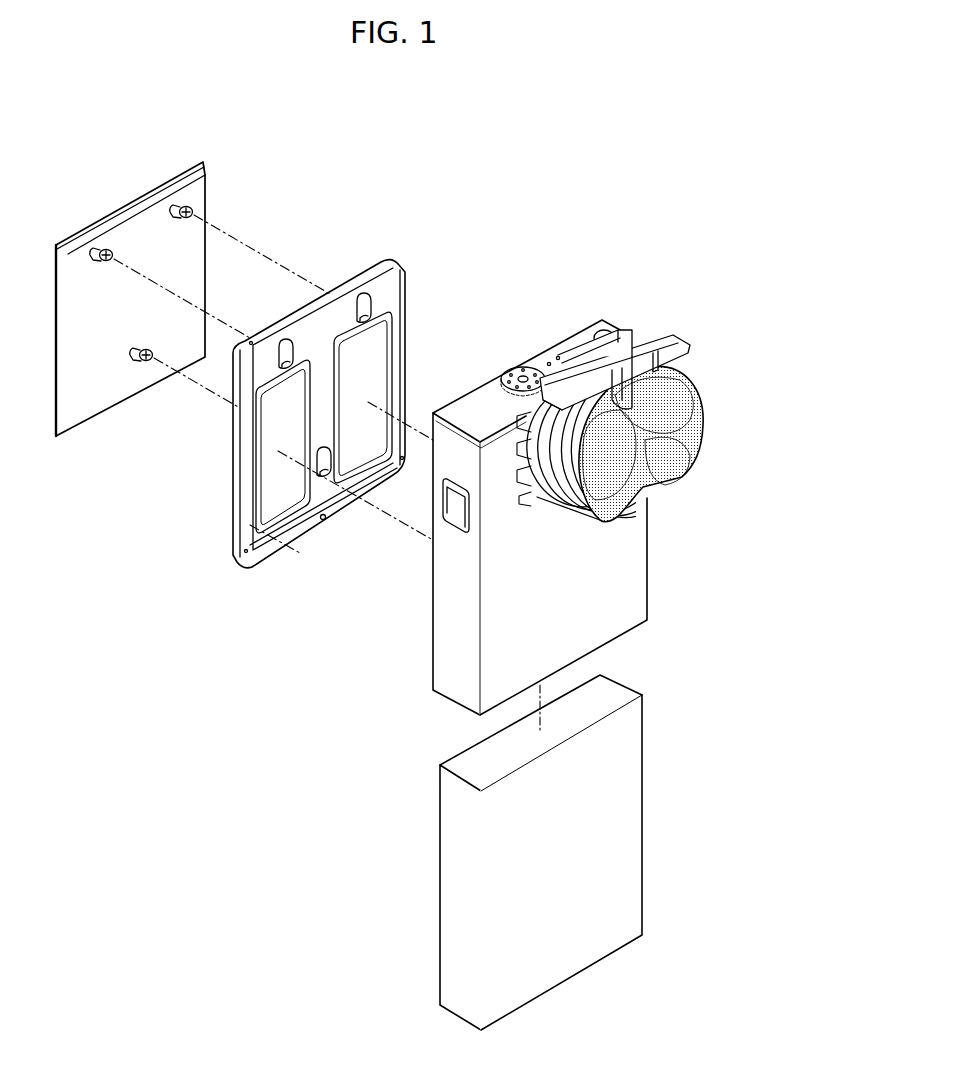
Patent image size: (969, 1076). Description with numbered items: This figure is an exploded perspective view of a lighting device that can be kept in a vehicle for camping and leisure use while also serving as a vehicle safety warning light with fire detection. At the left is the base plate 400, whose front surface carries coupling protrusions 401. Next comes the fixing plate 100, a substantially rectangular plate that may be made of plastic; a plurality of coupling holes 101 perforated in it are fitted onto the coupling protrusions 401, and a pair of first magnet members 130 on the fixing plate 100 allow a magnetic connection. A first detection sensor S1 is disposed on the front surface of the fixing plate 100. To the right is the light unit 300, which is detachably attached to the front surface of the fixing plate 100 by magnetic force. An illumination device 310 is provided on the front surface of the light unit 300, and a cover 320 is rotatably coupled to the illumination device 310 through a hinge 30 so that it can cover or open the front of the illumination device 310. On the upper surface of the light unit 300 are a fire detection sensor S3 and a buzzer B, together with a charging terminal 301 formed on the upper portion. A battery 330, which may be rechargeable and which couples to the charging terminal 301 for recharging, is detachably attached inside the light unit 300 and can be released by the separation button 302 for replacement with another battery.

The base plate 400 is at (222, 152).
The coupling protrusions 401 is at (110, 249).
The fixing plate 100 is at (415, 247).
The coupling holes 101 is at (376, 308).
The first magnet members 130 is at (368, 357).
The first detection sensor S1 is at (323, 522).
The light unit 300 is at (425, 717).
The charging terminal 301 is at (604, 325).
The separation button 302 is at (438, 508).
The fire detection sensor S3 is at (524, 372).
The buzzer B is at (559, 352).
The hinge 30 is at (697, 376).
The cover 320 is at (682, 431).
The illumination device 310 is at (634, 360).
The battery 330 is at (632, 790).